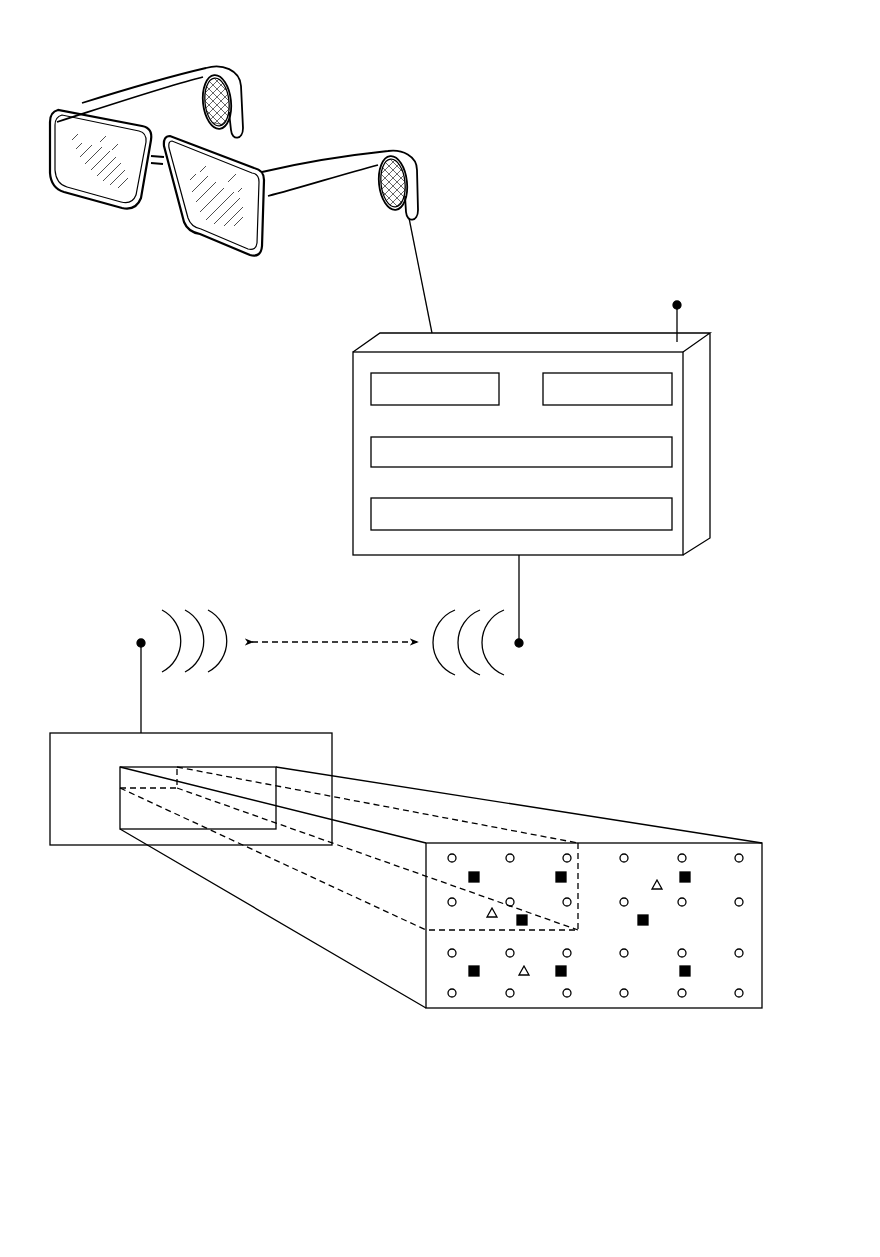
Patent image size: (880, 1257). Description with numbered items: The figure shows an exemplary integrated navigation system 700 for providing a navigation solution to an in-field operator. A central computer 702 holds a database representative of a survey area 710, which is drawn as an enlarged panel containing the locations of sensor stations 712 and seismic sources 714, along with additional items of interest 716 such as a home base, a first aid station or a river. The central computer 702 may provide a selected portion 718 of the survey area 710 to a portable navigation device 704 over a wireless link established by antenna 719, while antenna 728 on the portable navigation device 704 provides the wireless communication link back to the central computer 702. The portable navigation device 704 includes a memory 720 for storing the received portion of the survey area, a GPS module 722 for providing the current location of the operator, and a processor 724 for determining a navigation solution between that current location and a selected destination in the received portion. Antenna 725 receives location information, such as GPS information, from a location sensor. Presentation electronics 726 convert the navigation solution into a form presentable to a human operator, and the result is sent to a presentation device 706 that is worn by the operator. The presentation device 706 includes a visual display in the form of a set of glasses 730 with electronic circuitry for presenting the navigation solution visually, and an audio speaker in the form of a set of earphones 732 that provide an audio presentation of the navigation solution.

The integrated navigation system 700 is at (120, 38).
The central computer 702 is at (98, 647).
The portable navigation device 704 is at (317, 390).
The presentation device 706 is at (132, 275).
The survey area 710 is at (465, 1010).
The sensor stations 712 is at (567, 997).
The seismic sources 714 is at (690, 878).
The additional items of interest 716 is at (651, 886).
The selected portion of the survey area 718 is at (580, 865).
The antenna 719 is at (420, 265).
The memory 720 is at (502, 496).
The GPS module 722 is at (560, 373).
The processor 724 is at (502, 434).
The antenna 725 is at (677, 323).
The presentation electronics 726 is at (432, 373).
The antenna 728 is at (519, 598).
The visual display 730 is at (102, 213).
The audio speaker 732 is at (223, 87).